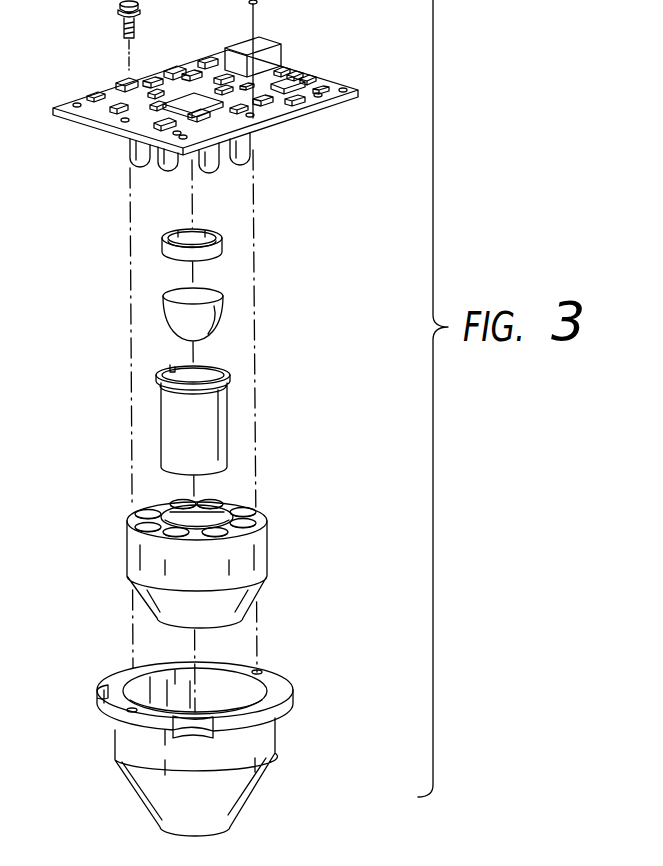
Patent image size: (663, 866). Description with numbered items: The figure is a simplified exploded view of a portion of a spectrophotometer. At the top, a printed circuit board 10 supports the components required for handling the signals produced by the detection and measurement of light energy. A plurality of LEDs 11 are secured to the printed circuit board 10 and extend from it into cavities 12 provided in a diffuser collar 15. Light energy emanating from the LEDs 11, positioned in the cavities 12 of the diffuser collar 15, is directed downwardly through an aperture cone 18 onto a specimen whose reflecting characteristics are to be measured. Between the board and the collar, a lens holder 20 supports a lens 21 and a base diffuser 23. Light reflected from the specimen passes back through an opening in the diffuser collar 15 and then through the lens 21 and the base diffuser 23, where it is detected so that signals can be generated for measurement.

The printed circuit board 10 is at (358, 94).
The LEDs 11 is at (217, 175).
The cavities 12 is at (252, 522).
The diffuser collar 15 is at (262, 566).
The aperture cone 18 is at (262, 788).
The lens holder 20 is at (228, 438).
The lens 21 is at (223, 321).
The base diffuser 23 is at (223, 246).